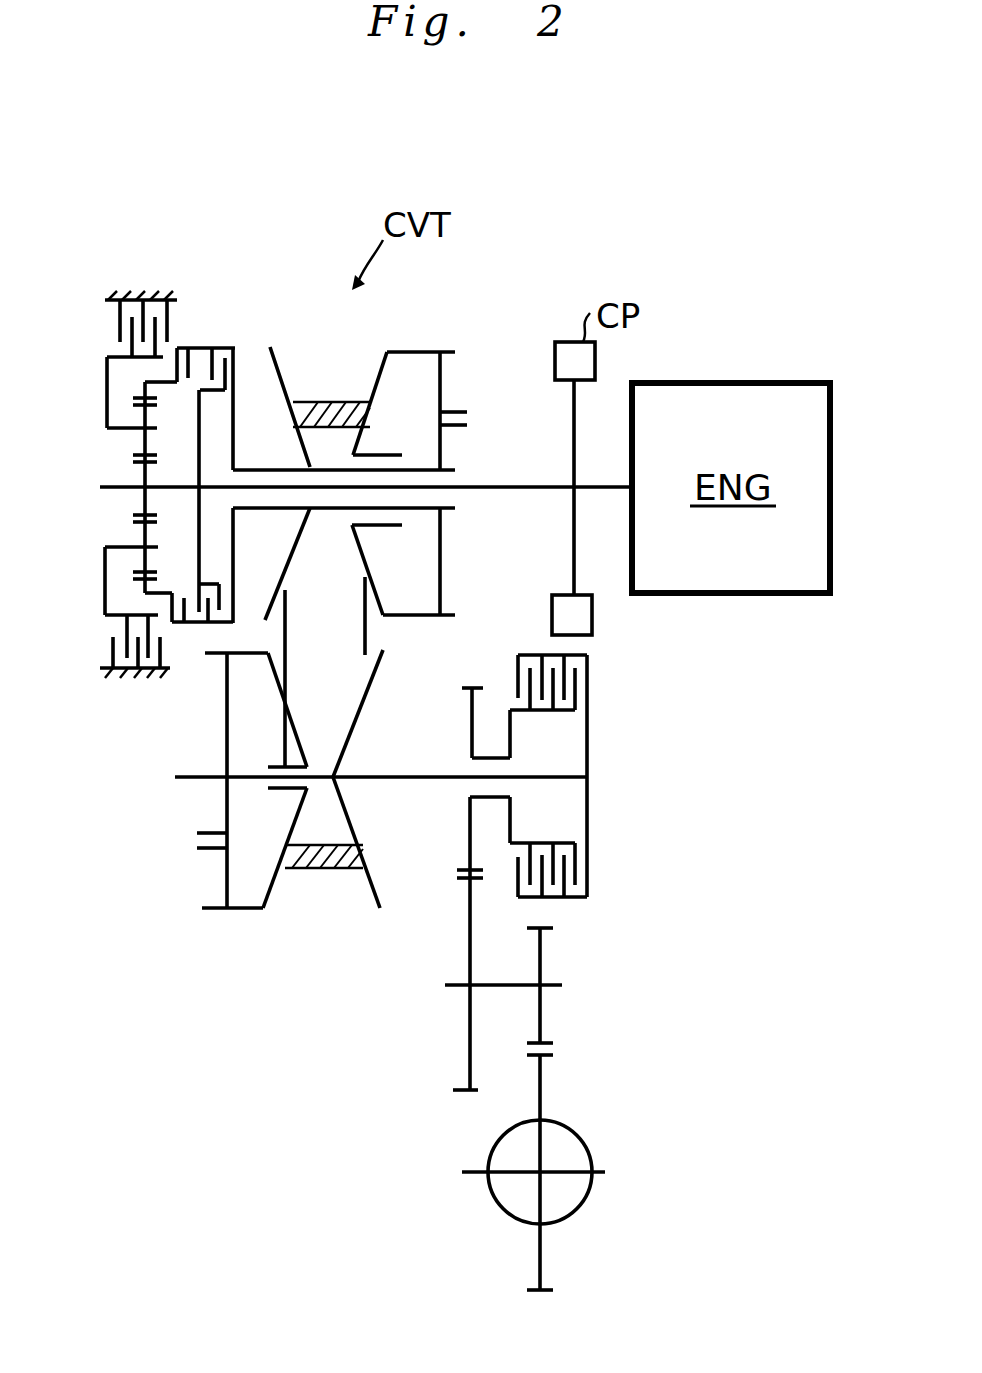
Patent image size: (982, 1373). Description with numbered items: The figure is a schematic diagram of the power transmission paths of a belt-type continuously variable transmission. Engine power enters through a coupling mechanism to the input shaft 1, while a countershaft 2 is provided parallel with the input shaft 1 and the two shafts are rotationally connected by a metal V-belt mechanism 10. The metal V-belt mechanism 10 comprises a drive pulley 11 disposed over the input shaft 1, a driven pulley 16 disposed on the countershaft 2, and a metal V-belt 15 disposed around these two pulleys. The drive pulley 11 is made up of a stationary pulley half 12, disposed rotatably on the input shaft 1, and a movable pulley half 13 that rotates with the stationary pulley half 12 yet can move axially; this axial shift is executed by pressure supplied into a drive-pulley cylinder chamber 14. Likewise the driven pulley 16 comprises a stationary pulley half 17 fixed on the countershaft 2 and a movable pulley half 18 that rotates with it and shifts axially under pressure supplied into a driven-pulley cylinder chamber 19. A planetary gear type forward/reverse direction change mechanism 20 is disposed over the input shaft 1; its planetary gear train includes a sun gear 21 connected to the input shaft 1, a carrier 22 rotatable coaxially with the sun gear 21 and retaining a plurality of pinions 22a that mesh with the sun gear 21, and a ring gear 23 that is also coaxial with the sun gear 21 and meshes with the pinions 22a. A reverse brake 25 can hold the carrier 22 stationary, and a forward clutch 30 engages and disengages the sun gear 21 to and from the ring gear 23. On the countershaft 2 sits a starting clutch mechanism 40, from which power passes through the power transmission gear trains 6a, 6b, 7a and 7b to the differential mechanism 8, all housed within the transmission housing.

The input shaft 1 is at (513, 490).
The countershaft 2 is at (395, 788).
The power transmission gear train 6a is at (465, 706).
The power transmission gear train 6b is at (460, 1093).
The power transmission gear train 7a is at (545, 955).
The power transmission gear train 7b is at (545, 1080).
The differential mechanism 8 is at (490, 1195).
The metal V-belt mechanism 10 is at (418, 344).
The drive pulley 11 is at (446, 603).
The stationary pulley half 12 is at (278, 367).
The movable pulley half 13 is at (377, 370).
The drive-pulley cylinder chamber 14 is at (422, 436).
The metal V-belt 15 is at (368, 640).
The driven pulley 16 is at (262, 914).
The stationary pulley half 17 is at (377, 887).
The movable pulley half 18 is at (272, 885).
The driven-pulley cylinder chamber 19 is at (272, 751).
The forward/reverse direction change mechanism 20 is at (181, 314).
The sun gear 21 is at (134, 512).
The carrier 22 is at (107, 432).
The pinions 22a is at (137, 452).
The ring gear 23 is at (145, 390).
The reverse brake 25 is at (110, 320).
The forward clutch 30 is at (207, 348).
The starting clutch mechanism 40 is at (590, 860).